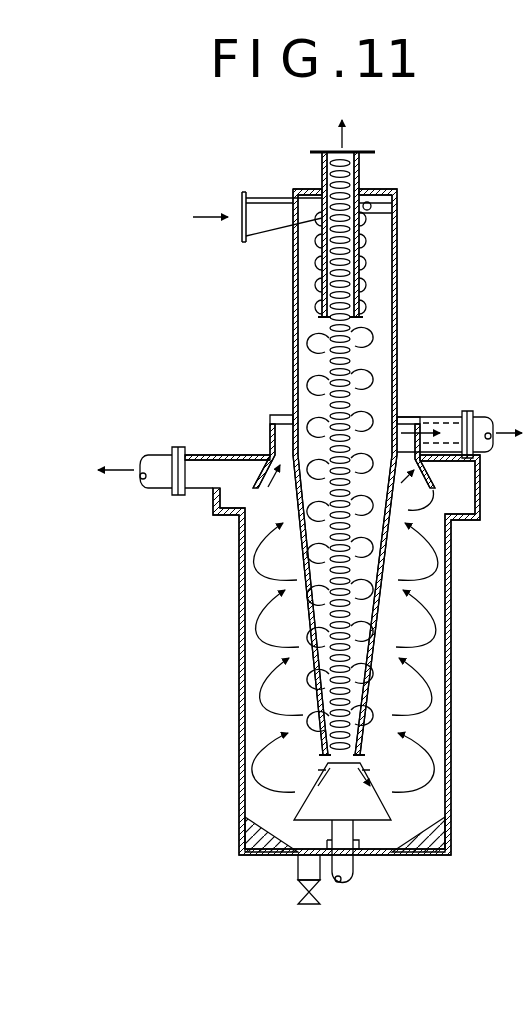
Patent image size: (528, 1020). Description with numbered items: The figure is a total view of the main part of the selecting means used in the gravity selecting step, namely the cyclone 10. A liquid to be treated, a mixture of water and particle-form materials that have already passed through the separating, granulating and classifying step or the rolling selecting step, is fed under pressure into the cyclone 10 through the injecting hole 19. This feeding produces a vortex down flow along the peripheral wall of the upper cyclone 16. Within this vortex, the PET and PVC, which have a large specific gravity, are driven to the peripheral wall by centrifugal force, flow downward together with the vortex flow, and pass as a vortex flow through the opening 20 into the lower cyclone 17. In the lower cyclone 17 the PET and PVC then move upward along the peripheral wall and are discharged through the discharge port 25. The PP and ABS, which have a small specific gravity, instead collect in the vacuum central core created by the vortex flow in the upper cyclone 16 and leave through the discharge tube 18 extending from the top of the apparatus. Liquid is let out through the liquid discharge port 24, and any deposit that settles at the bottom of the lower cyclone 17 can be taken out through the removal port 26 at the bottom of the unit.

The cyclone 10 is at (193, 178).
The upper cyclone 16 is at (398, 330).
The lower cyclone 17 is at (240, 640).
The discharge tube 18 is at (370, 275).
The injecting hole 19 is at (369, 206).
The opening 20 is at (341, 758).
The liquid discharge port 24 is at (405, 418).
The discharge port 25 is at (203, 470).
The removal port 26 is at (300, 868).